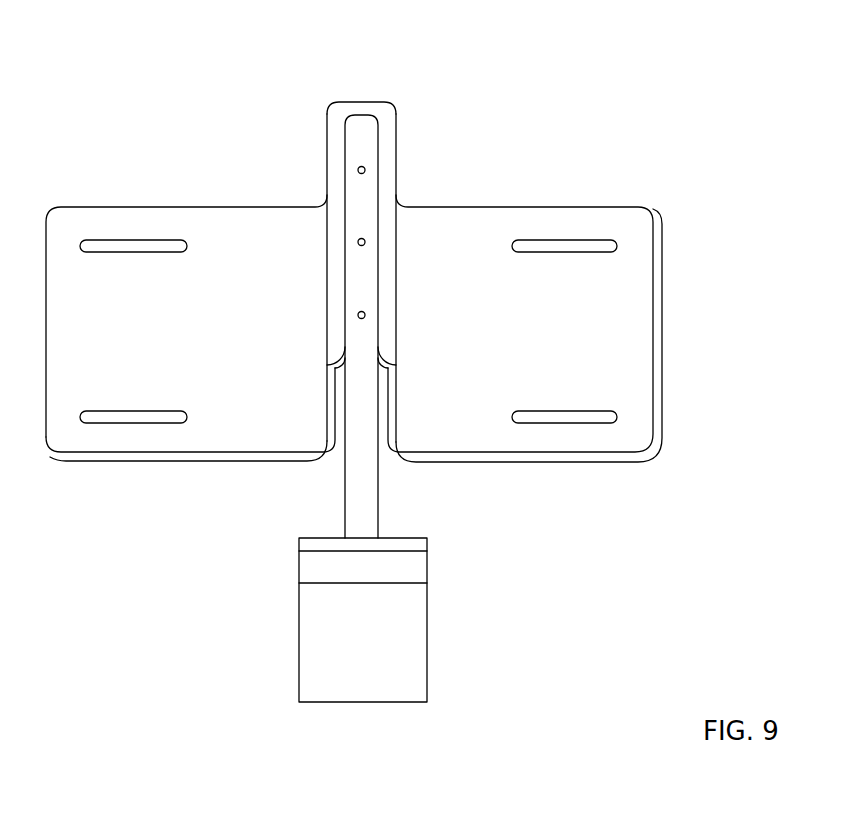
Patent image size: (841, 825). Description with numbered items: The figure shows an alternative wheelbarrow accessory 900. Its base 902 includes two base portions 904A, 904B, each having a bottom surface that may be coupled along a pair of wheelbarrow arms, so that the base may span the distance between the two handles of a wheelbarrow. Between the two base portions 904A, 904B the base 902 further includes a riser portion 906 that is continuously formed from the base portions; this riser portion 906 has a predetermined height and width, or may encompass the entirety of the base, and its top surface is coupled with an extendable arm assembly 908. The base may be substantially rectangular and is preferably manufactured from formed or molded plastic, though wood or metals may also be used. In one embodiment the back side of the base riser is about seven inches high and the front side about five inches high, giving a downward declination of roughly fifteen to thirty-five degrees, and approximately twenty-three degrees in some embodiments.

The alternative wheelbarrow accessory 900 is at (687, 91).
The base 902 is at (546, 357).
The base portion 904A is at (662, 169).
The base portion 904B is at (48, 171).
The riser portion 906 is at (322, 93).
The extendable arm assembly 908 is at (290, 718).